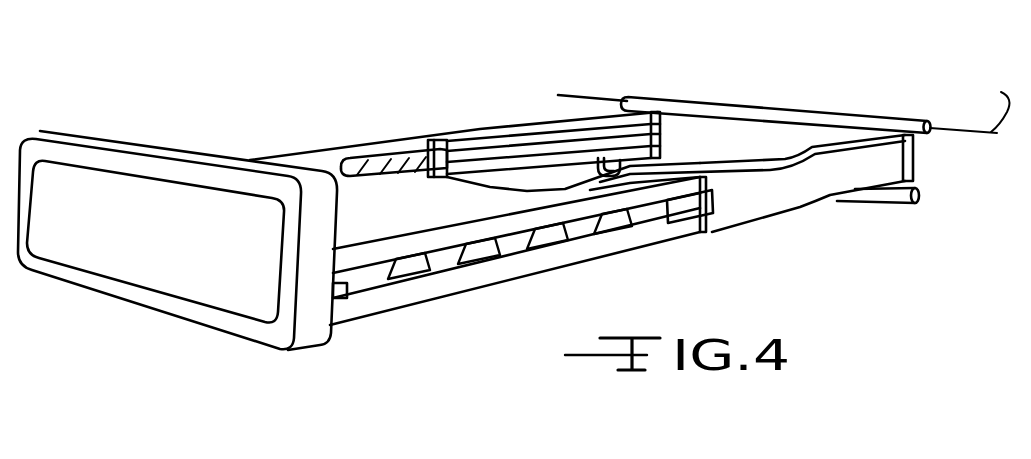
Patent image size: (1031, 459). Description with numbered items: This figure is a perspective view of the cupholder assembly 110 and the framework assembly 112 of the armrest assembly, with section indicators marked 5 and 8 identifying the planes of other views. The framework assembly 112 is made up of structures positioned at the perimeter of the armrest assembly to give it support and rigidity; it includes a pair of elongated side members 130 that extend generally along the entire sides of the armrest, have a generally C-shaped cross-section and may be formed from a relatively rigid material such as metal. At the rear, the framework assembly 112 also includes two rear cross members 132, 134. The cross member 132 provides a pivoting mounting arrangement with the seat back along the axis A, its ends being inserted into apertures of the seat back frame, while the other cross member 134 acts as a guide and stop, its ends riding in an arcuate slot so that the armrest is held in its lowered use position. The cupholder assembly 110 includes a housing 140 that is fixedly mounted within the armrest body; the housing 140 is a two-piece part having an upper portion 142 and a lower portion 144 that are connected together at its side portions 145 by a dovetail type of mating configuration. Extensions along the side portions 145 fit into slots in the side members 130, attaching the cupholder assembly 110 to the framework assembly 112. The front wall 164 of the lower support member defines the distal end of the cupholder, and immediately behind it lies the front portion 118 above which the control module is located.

The section line 8- 8 is at (173, 82).
The section line 5- 5 is at (347, 90).
The cupholder assembly 110 is at (258, 70).
The framework assembly 112 is at (820, 229).
The front portion 118 is at (383, 210).
The side members 130 is at (510, 127).
The rear cross member 132 is at (740, 104).
The rear cross member 134 is at (903, 209).
The housing 140 is at (318, 142).
The upper portion 142 is at (480, 128).
The lower portion 144 is at (523, 277).
The side portions 145 is at (600, 258).
The front wall 164 is at (92, 240).